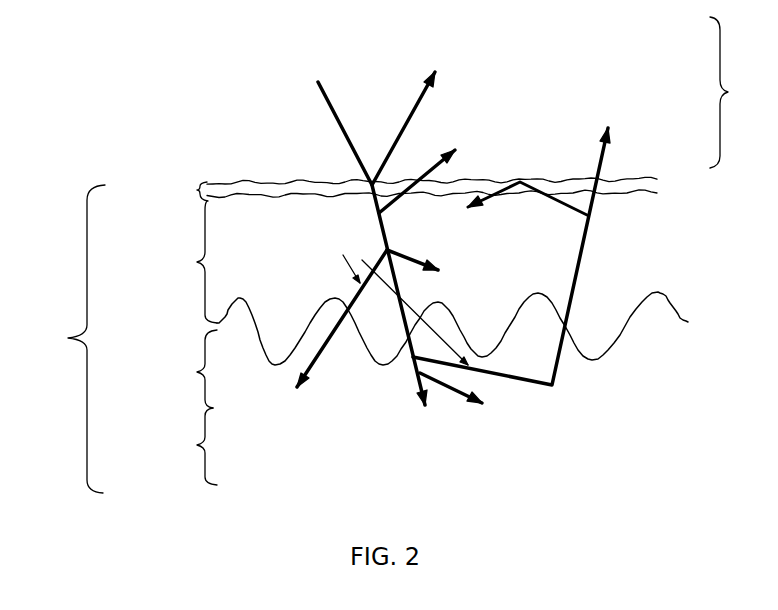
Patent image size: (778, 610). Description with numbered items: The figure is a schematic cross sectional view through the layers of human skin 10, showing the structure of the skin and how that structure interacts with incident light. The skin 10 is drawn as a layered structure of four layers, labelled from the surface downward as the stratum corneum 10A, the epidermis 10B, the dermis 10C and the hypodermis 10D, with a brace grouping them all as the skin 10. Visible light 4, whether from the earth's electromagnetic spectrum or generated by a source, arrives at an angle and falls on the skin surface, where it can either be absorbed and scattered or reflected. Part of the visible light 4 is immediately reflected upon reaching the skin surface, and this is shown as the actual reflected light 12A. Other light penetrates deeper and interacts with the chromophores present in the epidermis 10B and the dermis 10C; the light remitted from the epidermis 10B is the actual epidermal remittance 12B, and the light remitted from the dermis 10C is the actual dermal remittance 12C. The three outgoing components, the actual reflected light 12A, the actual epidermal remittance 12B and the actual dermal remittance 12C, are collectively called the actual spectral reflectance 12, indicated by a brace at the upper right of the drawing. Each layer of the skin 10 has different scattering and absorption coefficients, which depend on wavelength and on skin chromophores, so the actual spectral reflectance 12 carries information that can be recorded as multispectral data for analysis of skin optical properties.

The visible light 4 is at (346, 135).
The skin 10 is at (57, 339).
The stratum corneum 10A is at (397, 196).
The epidermis 10B is at (177, 262).
The dermis 10C is at (413, 350).
The hypodermis 10D is at (177, 446).
The actual spectral reflectance 12 is at (736, 92).
The actual reflected light 12A is at (426, 116).
The actual epidermal remittance 12B is at (442, 175).
The actual dermal remittance 12C is at (526, 241).